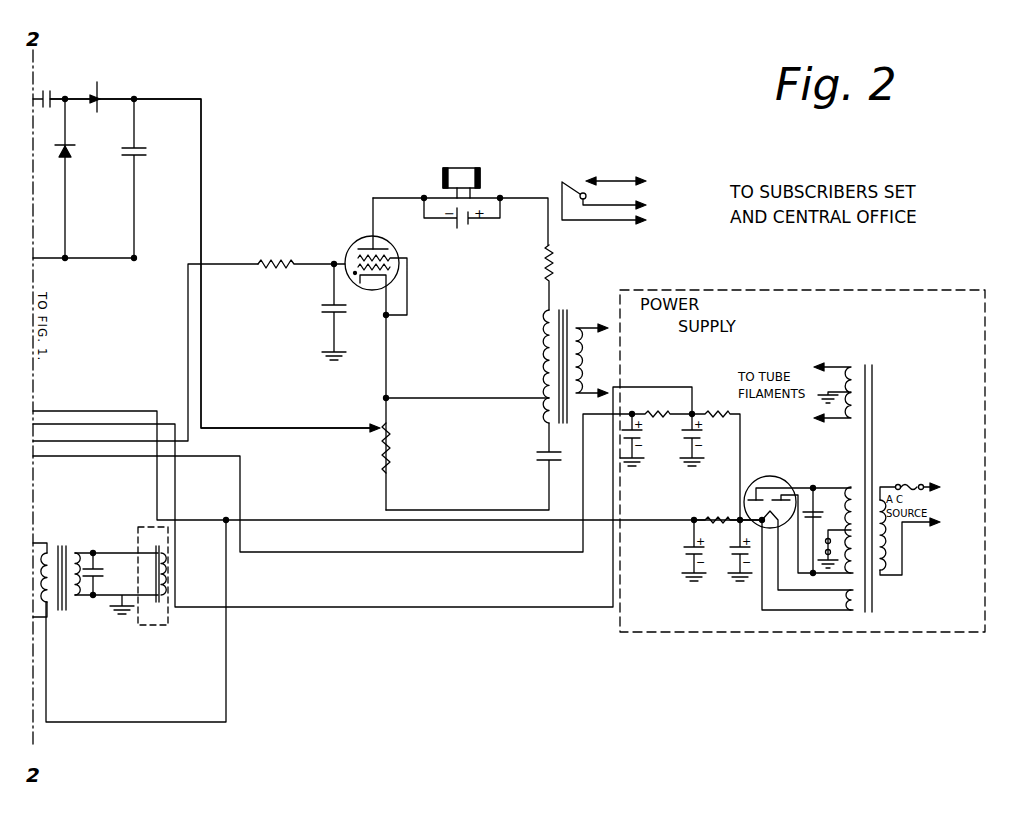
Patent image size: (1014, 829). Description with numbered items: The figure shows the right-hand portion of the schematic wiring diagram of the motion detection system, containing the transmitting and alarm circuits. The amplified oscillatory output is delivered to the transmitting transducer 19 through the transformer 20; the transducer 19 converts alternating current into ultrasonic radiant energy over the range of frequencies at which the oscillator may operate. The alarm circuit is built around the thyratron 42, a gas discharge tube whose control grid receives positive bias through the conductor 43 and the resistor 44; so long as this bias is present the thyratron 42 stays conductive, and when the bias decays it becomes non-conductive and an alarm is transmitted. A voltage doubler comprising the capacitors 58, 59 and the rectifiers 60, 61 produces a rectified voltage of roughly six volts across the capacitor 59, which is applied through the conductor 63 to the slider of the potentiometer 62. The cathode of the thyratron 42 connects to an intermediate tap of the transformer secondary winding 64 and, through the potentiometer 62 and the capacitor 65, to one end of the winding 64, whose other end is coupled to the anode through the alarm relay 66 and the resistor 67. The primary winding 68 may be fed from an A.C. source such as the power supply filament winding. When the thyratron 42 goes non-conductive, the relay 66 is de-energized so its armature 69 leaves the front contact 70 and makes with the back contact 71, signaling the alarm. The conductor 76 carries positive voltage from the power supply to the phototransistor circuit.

The transmitting transducer 19 is at (150, 625).
The transformer 20 is at (62, 626).
The thyratron 42 is at (399, 249).
The conductor 43 is at (188, 358).
The resistor 44 is at (278, 270).
The capacitor 58 is at (55, 95).
The capacitor 59 is at (136, 158).
The rectifier 60 is at (67, 152).
The rectifier 61 is at (103, 96).
The potentiometer 62 is at (392, 455).
The conductor 63 is at (160, 97).
The transformer secondary winding 64 is at (549, 353).
The capacitor 65 is at (548, 461).
The alarm relay 66 is at (482, 172).
The resistor 67 is at (553, 283).
The primary winding 68 is at (585, 355).
The armature 69 is at (584, 180).
The front contact 70 is at (572, 180).
The back contact 71 is at (594, 184).
The conductor 76 is at (338, 518).